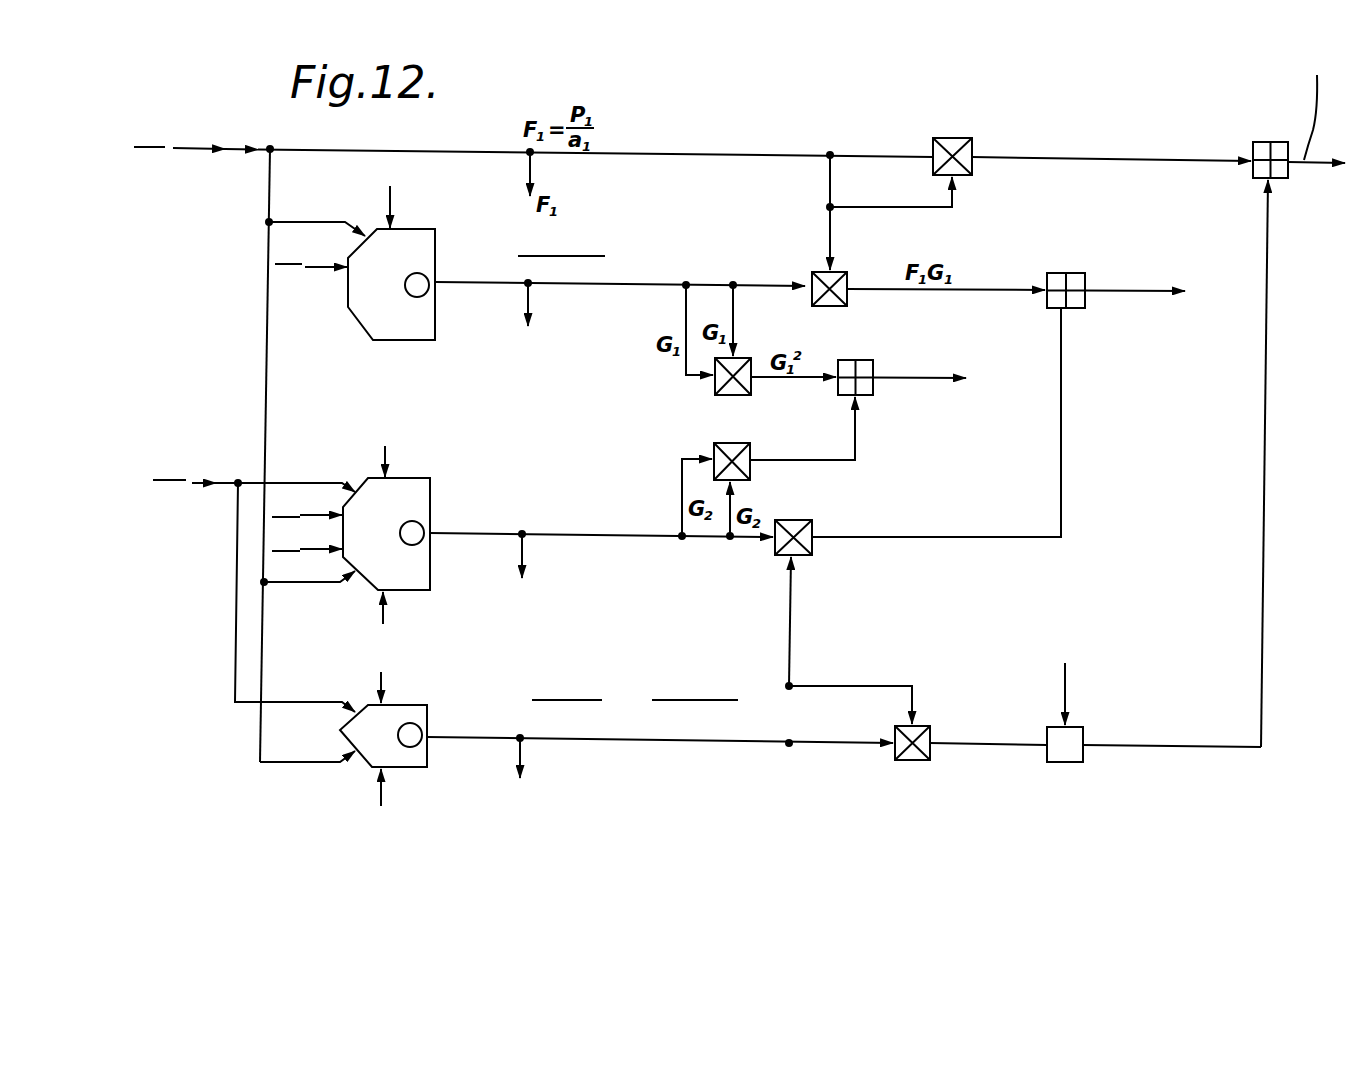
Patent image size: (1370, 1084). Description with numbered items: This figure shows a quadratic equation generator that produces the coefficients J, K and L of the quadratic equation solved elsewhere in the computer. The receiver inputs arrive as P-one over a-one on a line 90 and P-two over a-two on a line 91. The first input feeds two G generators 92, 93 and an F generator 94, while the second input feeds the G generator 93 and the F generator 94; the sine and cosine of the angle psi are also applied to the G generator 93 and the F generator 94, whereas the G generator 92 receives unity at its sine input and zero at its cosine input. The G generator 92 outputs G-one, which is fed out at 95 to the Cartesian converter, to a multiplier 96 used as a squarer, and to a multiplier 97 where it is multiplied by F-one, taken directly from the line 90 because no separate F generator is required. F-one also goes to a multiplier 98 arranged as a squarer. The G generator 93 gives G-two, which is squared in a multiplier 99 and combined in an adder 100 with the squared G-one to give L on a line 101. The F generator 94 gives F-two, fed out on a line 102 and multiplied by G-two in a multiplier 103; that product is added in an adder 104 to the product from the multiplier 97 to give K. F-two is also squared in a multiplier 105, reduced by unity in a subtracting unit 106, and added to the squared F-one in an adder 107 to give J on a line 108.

The line 90 is at (200, 146).
The line 91 is at (205, 478).
The G generator 92 is at (418, 240).
The G generator 93 is at (410, 480).
The F generator 94 is at (427, 707).
The G1 output 95 is at (530, 301).
The multiplier 96 is at (716, 382).
The multiplier 97 is at (828, 277).
The multiplier 98 is at (948, 138).
The multiplier 99 is at (714, 455).
The adder 100 is at (865, 383).
The line 101 is at (938, 380).
The line 102 is at (522, 753).
The multiplier 103 is at (805, 545).
The adder 104 is at (1077, 298).
The multiplier 105 is at (1145, 293).
The subtracting unit 106 is at (908, 753).
The adder 107 is at (1062, 752).
The line 108 is at (1263, 142).